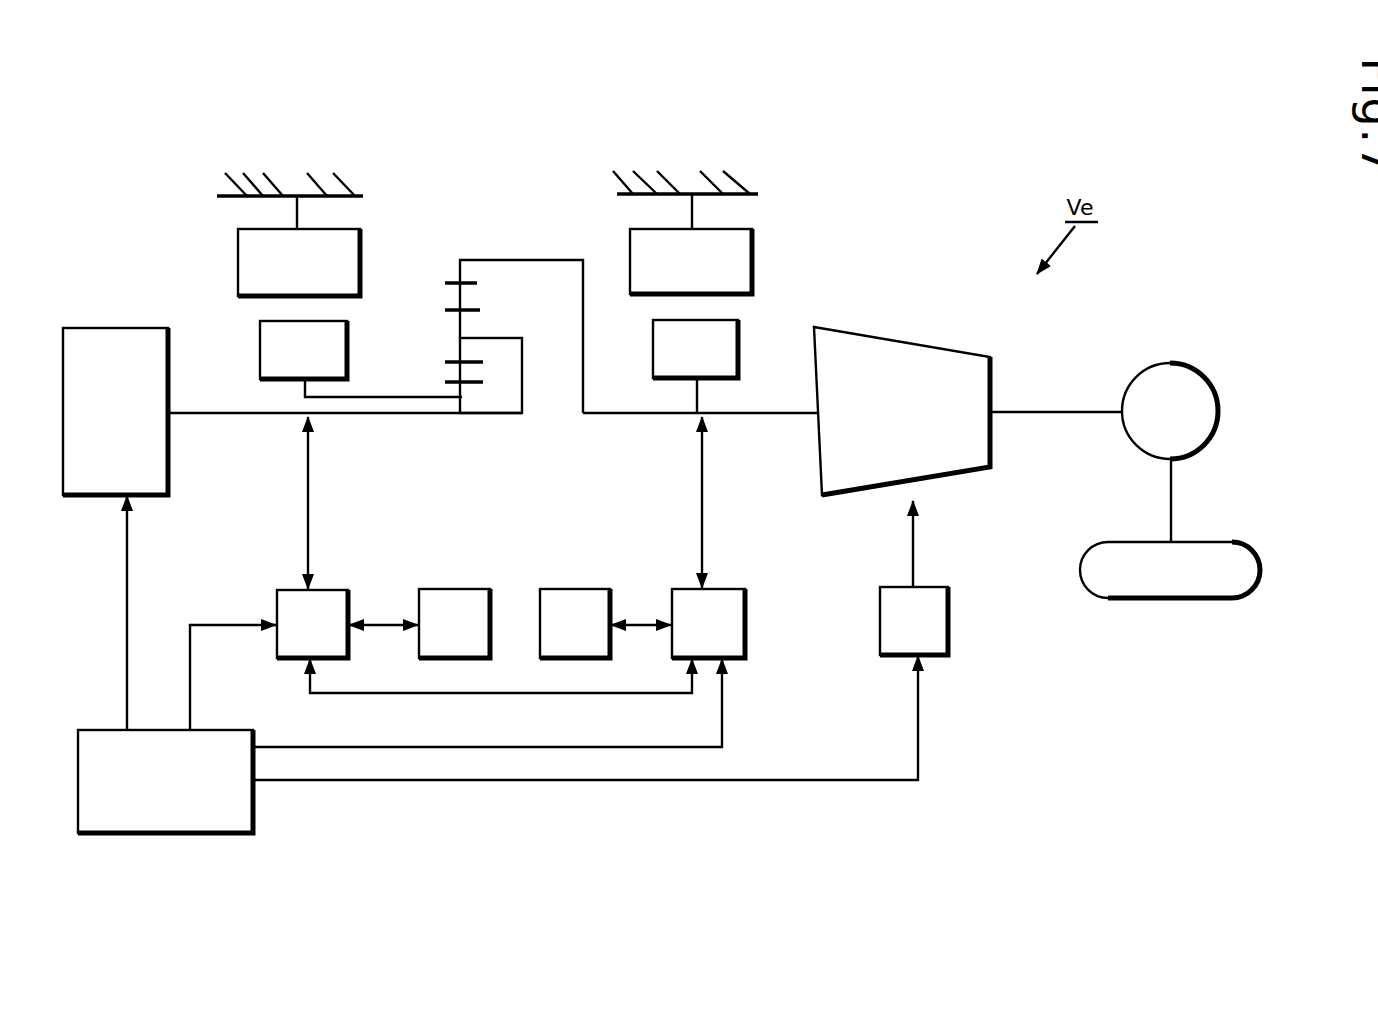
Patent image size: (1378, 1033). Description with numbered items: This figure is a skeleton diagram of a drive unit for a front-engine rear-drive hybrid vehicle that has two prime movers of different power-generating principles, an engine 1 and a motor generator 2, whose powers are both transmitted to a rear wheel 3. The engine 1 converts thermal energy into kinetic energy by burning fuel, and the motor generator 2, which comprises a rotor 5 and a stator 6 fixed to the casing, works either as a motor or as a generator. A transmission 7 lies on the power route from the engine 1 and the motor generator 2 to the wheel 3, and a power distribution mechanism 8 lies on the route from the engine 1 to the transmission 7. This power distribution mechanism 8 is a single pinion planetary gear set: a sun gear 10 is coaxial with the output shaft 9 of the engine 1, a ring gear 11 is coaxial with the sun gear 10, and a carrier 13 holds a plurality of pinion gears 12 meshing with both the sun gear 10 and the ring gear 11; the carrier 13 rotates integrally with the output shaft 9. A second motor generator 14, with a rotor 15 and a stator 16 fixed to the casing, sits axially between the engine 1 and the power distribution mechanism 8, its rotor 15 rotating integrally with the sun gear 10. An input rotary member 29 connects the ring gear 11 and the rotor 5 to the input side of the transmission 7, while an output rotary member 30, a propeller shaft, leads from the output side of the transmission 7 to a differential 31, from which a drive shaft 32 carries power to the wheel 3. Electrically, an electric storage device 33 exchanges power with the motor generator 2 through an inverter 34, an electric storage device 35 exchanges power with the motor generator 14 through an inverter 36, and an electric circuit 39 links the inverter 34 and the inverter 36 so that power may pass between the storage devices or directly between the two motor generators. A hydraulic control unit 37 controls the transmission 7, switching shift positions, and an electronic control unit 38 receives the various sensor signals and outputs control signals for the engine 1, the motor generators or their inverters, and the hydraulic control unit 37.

The engine 1 is at (97, 336).
The motor generator 2 is at (719, 271).
The wheel 3 is at (1201, 552).
The rotor 5 is at (665, 358).
The stator 6 is at (648, 248).
The transmission 7 is at (900, 351).
The power distribution mechanism 8 is at (488, 297).
The output shaft 9 is at (467, 416).
The sun gear 10 is at (454, 380).
The ring gear 11 is at (470, 288).
The pinion gears 12 is at (454, 308).
The carrier 13 is at (500, 338).
The motor generator 14 is at (294, 263).
The rotor 15 is at (276, 352).
The stator 16 is at (252, 268).
The input rotary member 29 is at (763, 414).
The output rotary member 30 is at (1056, 412).
The differential 31 is at (1163, 380).
The drive shaft 32 is at (1169, 492).
The electric storage device 33 is at (574, 598).
The inverter 34 is at (725, 598).
The electric storage device 35 is at (452, 598).
The inverter 36 is at (330, 592).
The hydraulic control unit 37 is at (933, 598).
The electronic control unit 38 is at (169, 816).
The electric circuit 39 is at (496, 693).